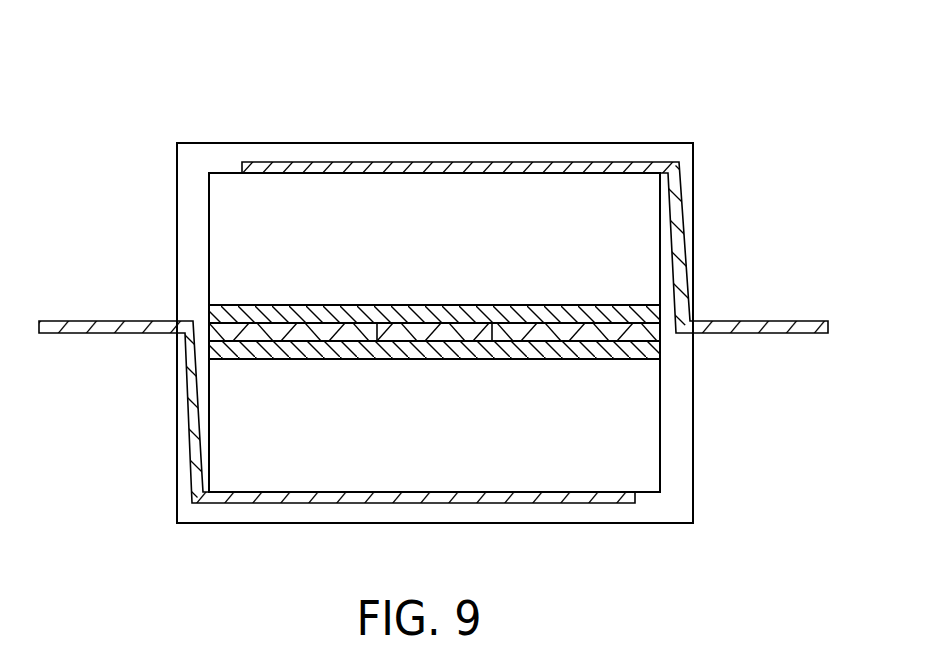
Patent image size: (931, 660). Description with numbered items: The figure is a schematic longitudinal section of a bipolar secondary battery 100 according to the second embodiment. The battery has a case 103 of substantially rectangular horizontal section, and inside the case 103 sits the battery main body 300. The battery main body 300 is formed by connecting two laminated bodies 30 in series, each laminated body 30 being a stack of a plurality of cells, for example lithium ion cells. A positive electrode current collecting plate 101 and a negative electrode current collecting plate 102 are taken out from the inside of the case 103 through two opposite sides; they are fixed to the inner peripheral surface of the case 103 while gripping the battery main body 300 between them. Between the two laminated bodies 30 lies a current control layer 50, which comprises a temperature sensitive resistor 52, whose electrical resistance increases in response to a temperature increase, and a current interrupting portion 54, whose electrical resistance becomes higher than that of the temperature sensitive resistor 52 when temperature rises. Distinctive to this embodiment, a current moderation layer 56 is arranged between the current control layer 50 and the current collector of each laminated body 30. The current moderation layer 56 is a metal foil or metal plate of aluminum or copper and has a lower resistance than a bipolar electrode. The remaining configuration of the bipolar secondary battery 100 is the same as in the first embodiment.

The bipolar secondary battery 100 is at (231, 137).
The case 103 is at (192, 164).
The battery main body 300 is at (204, 229).
The laminated body 30 is at (652, 211).
The current control layer 50 is at (477, 103).
The temperature sensitive resistor 52 is at (470, 330).
The current interrupting portion 54 is at (568, 330).
The current moderation layer 56 is at (294, 345).
The positive electrode current collecting plate 101 is at (785, 322).
The negative electrode current collecting plate 102 is at (103, 320).